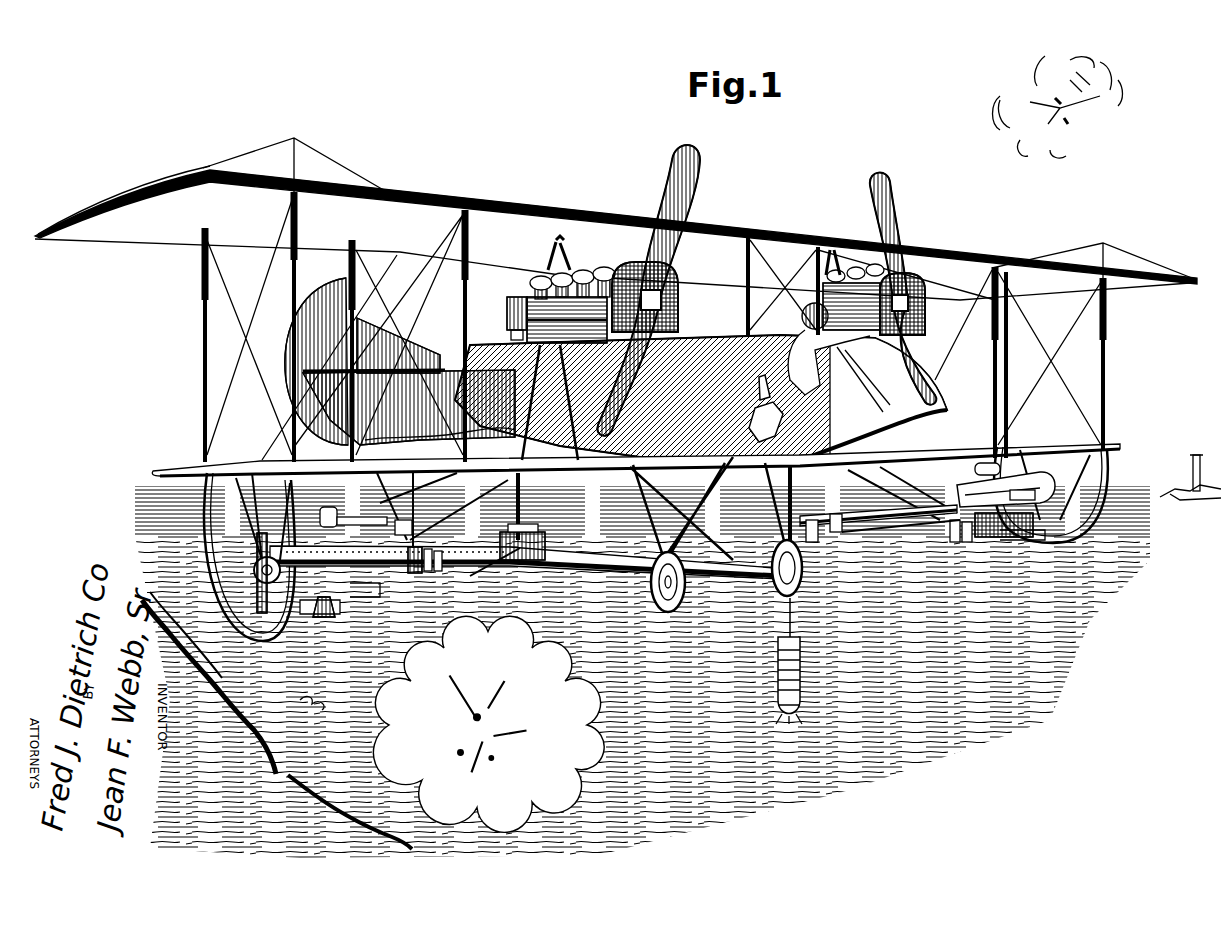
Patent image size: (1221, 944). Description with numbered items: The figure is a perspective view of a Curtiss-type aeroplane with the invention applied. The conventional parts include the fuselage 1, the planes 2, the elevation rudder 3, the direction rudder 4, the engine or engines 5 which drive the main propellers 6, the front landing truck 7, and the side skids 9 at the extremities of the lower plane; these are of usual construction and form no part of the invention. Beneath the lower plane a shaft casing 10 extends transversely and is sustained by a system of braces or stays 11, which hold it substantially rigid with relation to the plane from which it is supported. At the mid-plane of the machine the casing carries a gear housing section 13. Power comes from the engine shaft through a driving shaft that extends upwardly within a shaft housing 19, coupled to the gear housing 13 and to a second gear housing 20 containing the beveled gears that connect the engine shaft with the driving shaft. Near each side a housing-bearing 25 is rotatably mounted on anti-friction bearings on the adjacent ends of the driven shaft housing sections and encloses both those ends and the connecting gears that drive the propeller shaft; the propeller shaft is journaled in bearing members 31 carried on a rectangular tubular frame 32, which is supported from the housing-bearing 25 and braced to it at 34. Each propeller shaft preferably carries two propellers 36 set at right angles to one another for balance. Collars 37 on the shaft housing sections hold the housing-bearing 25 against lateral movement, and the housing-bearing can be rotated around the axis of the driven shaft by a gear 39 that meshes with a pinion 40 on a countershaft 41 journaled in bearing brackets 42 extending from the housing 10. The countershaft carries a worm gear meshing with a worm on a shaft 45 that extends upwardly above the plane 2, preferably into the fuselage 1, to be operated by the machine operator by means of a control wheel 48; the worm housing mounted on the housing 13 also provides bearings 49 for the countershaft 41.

The fuselage 1 is at (701, 382).
The planes 2 is at (533, 228).
The elevation rudder 3 is at (410, 375).
The direction rudder 4 is at (316, 361).
The engine 5 is at (726, 290).
The main propellers 6 is at (695, 182).
The front landing truck 7 is at (705, 580).
The side skids 9 is at (216, 588).
The shaft casing 10 is at (590, 551).
The braces or stays 11 is at (218, 548).
The gear housing section 13 is at (540, 538).
The shaft housing 19 is at (520, 367).
The second gear housing 20 is at (504, 318).
The housing-bearing 25 is at (697, 627).
The bearing members 31 is at (326, 505).
The rectangular tubular frame 32 is at (345, 518).
The brace 34 is at (248, 573).
The propellers 36 is at (385, 527).
The collars 37 is at (253, 579).
The gear 39 is at (418, 547).
The pinion 40 is at (426, 572).
The countershaft 41 is at (901, 533).
The bearing brackets 42 is at (438, 572).
The shaft 45 is at (828, 480).
The control wheel 48 is at (845, 531).
The bearings 49 is at (815, 542).